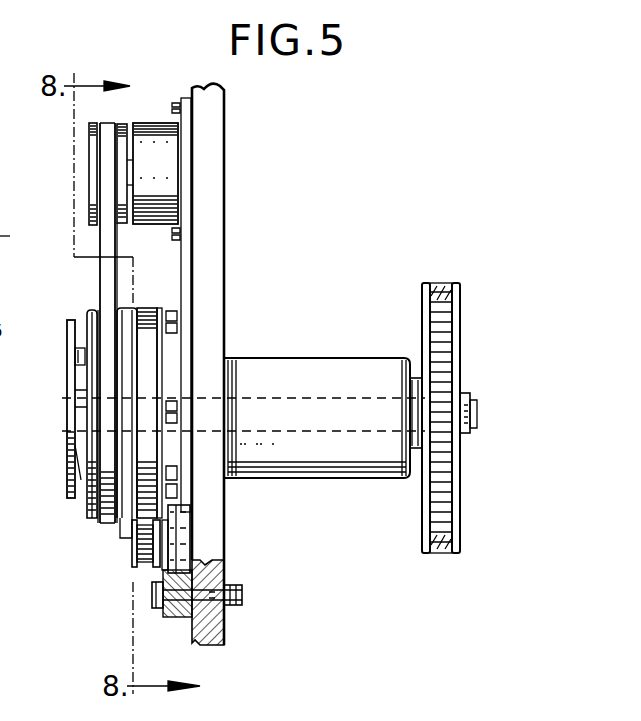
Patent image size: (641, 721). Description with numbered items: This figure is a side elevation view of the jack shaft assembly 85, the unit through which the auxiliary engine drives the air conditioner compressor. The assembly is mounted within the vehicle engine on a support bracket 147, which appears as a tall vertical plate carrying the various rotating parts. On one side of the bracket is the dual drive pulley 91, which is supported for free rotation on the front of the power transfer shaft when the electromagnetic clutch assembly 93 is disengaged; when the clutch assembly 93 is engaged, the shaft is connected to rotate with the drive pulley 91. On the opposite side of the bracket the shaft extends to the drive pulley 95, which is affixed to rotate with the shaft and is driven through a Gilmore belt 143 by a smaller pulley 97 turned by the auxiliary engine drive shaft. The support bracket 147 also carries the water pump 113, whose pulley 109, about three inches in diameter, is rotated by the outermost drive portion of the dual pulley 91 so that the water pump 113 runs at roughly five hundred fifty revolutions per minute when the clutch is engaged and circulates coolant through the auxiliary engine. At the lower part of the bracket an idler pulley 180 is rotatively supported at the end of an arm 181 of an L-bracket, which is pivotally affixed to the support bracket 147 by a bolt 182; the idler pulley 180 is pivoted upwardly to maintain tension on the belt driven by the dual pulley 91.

The jack shaft assembly 85 is at (262, 365).
The dual drive pulley 91 is at (88, 312).
The electromagnetic clutch assembly 93 is at (72, 376).
The drive pulley 95 is at (418, 317).
The pulley 97 is at (10, 684).
The pulley 109 is at (90, 154).
The water pump 113 is at (157, 138).
The Gilmore belt 143 is at (440, 550).
The support bracket 147 is at (217, 189).
The idler pulley 180 is at (134, 550).
The arm 181 is at (178, 541).
The bolt 182 is at (150, 594).